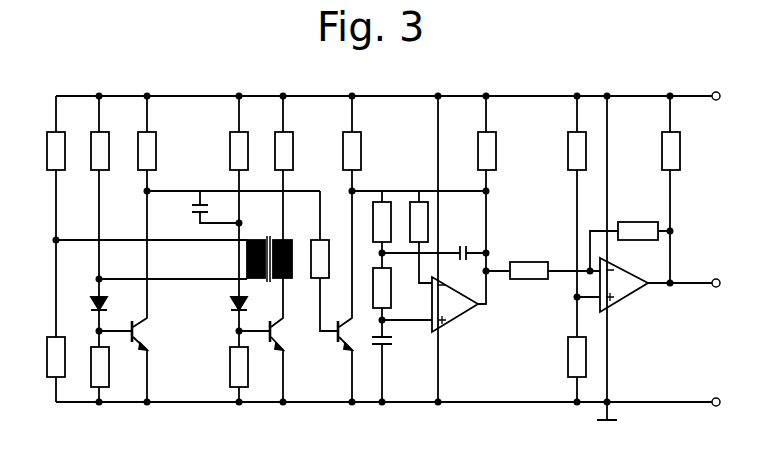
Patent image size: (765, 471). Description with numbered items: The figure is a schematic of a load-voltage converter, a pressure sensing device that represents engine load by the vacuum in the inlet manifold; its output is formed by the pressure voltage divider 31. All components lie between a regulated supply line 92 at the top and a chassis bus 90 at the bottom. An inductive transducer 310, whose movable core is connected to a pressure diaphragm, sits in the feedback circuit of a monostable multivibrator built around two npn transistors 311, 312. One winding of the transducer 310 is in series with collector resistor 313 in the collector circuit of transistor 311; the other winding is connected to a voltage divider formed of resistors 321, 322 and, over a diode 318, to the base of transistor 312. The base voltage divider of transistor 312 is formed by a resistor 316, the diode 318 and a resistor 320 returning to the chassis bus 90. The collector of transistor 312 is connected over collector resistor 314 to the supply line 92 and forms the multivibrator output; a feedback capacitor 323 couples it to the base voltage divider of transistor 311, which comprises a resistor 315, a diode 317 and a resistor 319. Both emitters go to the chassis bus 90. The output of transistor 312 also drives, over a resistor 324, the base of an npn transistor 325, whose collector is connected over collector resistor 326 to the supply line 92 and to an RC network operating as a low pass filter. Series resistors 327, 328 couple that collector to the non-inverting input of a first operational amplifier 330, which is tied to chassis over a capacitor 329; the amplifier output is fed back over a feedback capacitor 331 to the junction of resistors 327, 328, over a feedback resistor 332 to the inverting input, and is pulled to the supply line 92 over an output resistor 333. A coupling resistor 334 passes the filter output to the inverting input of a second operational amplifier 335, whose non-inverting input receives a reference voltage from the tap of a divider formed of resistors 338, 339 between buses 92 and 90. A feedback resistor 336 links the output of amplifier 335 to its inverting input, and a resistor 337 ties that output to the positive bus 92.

The pressure voltage divider 31 is at (89, 408).
The chassis bus 90 is at (476, 403).
The regulated supply line 92 is at (518, 96).
The inductive transducer 310 is at (266, 236).
The npn transistor 311 is at (284, 325).
The npn transistor 312 is at (140, 333).
The collector resistor 313 is at (292, 141).
The collector resistor 314 is at (156, 148).
The resistor 315 is at (230, 152).
The resistor 316 is at (108, 146).
The diode 317 is at (231, 304).
The diode 318 is at (91, 304).
The resistor 319 is at (230, 367).
The resistor 320 is at (108, 370).
The resistor 321 is at (65, 146).
The resistor 322 is at (65, 350).
The capacitor 323 is at (192, 208).
The resistor 324 is at (311, 252).
The npn transistor 325 is at (348, 345).
The collector resistor 326 is at (361, 141).
The resistor 327 is at (390, 215).
The resistor 328 is at (390, 289).
The capacitor 329 is at (391, 344).
The first operational amplifier 330 is at (455, 313).
The feedback capacitor 331 is at (463, 259).
The feedback resistor 332 is at (428, 213).
The output resistor 333 is at (495, 141).
The coupling resistor 334 is at (525, 262).
The second operational amplifier 335 is at (626, 290).
The feedback resistor 336 is at (634, 222).
The resistor 337 is at (662, 152).
The resistor 338 is at (568, 150).
The resistor 339 is at (568, 357).